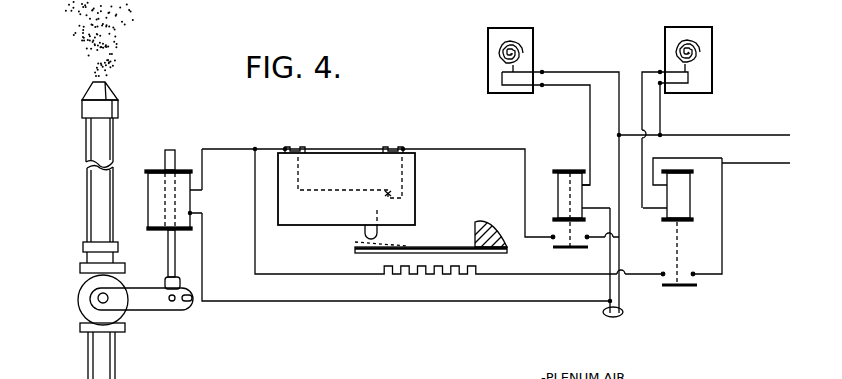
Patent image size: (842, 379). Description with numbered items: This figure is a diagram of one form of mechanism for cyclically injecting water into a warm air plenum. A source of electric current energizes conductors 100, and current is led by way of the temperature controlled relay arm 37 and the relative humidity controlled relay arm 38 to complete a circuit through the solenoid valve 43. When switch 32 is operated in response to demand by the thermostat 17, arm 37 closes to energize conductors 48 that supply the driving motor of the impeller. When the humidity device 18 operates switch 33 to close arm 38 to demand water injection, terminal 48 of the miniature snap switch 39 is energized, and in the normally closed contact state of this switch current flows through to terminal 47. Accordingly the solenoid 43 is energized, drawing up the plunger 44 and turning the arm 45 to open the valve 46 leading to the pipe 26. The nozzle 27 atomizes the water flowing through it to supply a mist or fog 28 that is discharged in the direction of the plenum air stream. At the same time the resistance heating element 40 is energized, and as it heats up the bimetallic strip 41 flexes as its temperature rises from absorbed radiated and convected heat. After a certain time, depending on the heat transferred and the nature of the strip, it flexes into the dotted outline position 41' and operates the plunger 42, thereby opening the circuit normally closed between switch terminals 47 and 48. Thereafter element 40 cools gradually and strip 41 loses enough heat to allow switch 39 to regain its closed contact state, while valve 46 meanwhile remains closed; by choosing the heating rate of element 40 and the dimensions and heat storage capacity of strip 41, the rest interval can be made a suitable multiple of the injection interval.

The thermostat 17 is at (712, 62).
The relative humidity device 18 is at (530, 57).
The pipe 26 is at (87, 192).
The nozzle 27 is at (85, 105).
The mist or fog 28 is at (120, 40).
The switch 32 is at (693, 200).
The switch 33 is at (558, 200).
The temperature controlled relay arm 37 is at (680, 288).
The relative humidity controlled relay arm 38 is at (570, 250).
The switch element 39 is at (363, 167).
The resistance heating element 40 is at (415, 276).
The bimetallic strip 41 is at (445, 235).
The dotted outline curved position of bimetallic strip 41' is at (360, 272).
The plunger 42 is at (365, 232).
The solenoid valve 43 is at (180, 207).
The plunger 44 is at (172, 258).
The arm 45 is at (143, 302).
The valve 46 is at (80, 298).
The terminal 47 is at (297, 147).
The terminal / conductors 48 is at (398, 147).
The conductors 100 is at (704, 149).